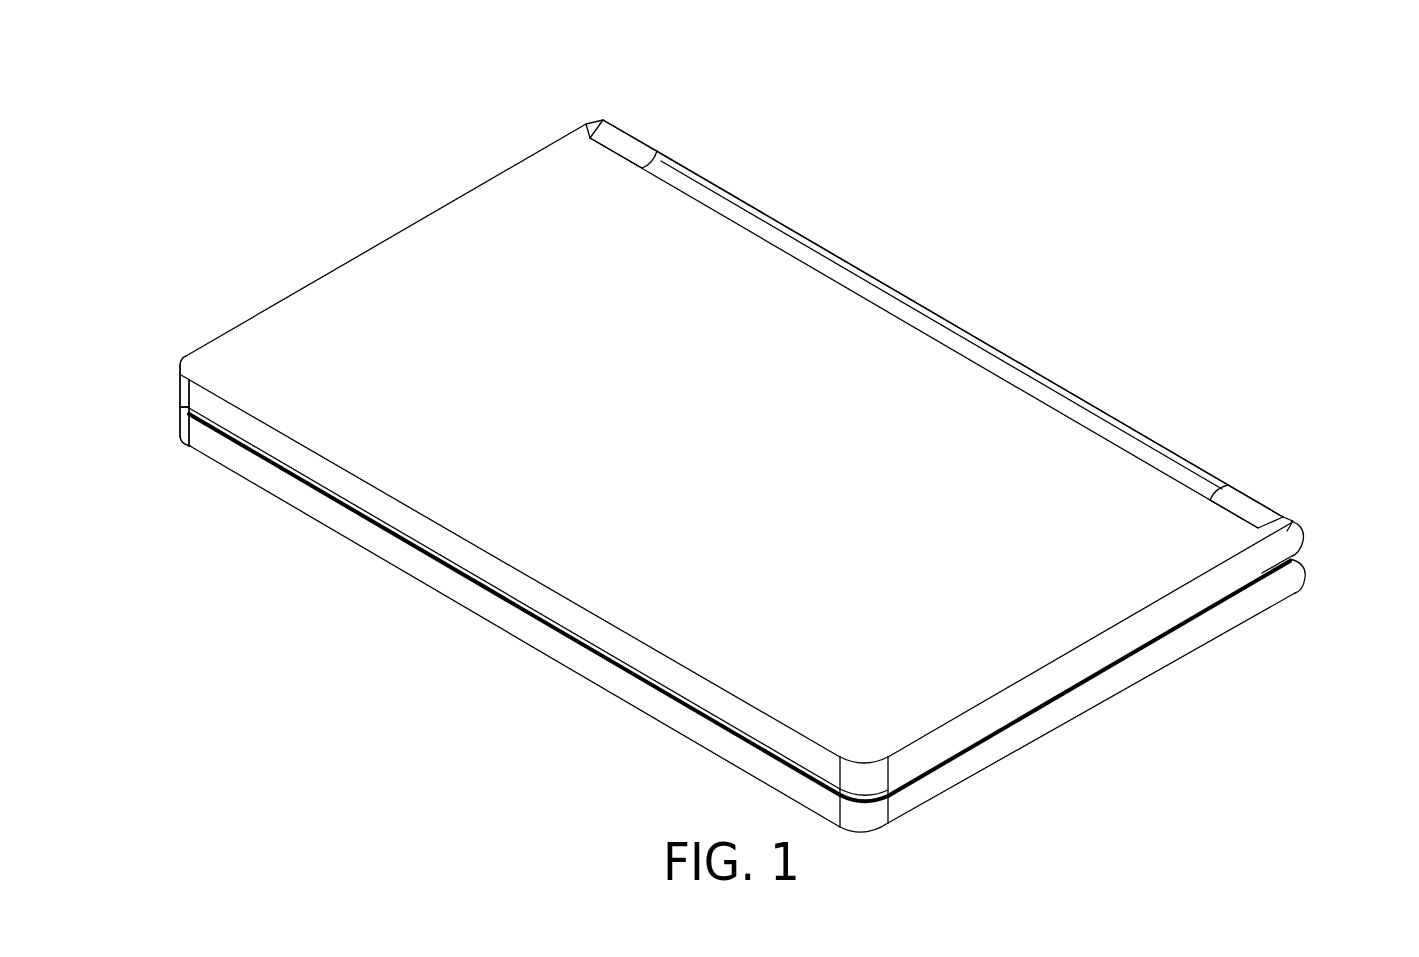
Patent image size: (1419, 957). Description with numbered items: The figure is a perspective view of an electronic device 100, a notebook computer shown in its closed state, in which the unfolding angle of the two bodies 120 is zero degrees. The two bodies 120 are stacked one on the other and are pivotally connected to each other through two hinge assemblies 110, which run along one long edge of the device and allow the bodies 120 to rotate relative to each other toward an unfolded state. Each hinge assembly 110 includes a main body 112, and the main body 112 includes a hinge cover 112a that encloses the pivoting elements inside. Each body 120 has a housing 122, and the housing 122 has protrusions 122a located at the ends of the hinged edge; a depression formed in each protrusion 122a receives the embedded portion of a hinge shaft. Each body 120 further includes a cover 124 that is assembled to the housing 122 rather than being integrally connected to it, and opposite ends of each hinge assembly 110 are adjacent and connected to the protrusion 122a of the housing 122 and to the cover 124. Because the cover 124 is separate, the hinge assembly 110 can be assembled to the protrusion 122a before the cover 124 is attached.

The electronic device 100 is at (1360, 849).
The hinge assembly 110 is at (968, 283).
The main body 112 is at (929, 283).
The hinge cover 112a is at (625, 148).
The body 120 is at (163, 383).
The housing 122 is at (1088, 655).
The protrusion 122a is at (588, 131).
The cover 124 is at (897, 299).